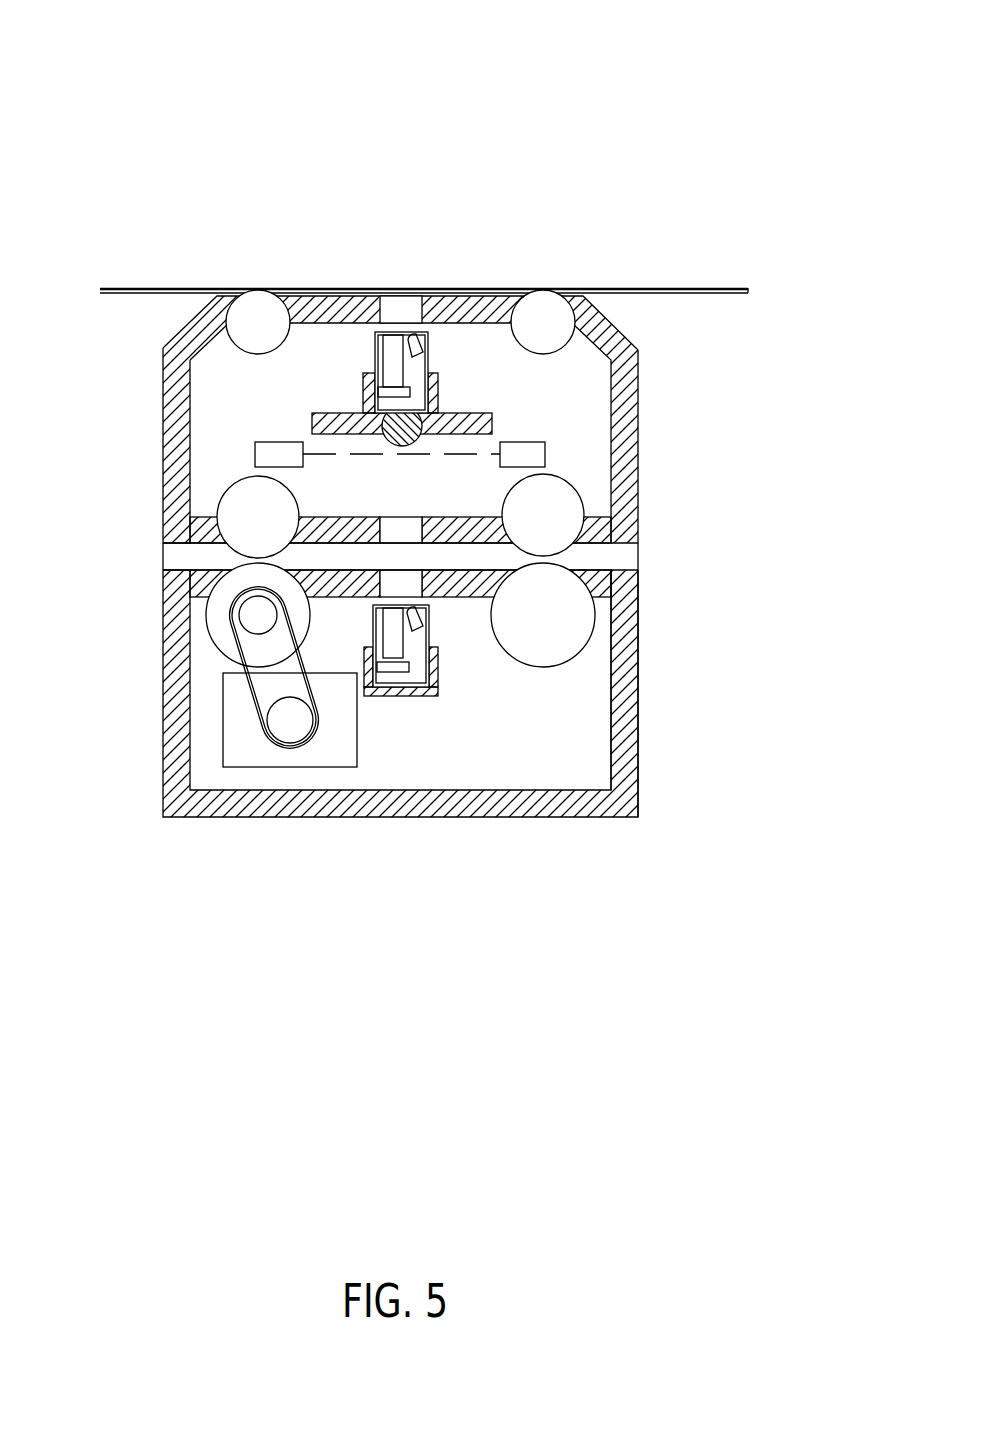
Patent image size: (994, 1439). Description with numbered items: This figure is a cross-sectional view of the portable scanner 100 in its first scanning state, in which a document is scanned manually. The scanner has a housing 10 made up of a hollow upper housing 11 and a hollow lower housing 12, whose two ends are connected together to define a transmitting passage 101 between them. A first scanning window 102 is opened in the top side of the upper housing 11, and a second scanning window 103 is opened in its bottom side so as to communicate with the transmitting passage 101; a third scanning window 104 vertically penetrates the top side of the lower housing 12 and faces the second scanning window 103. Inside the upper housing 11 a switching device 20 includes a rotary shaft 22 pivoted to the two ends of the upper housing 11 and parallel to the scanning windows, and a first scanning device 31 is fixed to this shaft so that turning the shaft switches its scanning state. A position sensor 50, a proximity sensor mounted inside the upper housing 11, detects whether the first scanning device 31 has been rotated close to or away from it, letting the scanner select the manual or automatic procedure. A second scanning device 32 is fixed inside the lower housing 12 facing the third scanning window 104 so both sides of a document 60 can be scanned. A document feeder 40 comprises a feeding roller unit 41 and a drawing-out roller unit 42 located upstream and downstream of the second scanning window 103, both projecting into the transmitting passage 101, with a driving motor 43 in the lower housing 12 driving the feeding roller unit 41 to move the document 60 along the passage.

The portable scanner 100 is at (397, 41).
The housing 10 is at (682, 393).
The upper housing 11 is at (323, 305).
The lower housing 12 is at (625, 720).
The switching device 20 is at (470, 420).
The rotary shaft 22 is at (340, 425).
The first scanning device 31 is at (418, 365).
The second scanning device 32 is at (407, 675).
The document feeder 40 is at (526, 731).
The feeding roller unit 41 is at (223, 612).
The drawing-out roller unit 42 is at (563, 627).
The driving motor 43 is at (248, 726).
The position sensor 50 is at (522, 455).
The document 60 is at (748, 289).
The transmitting passage 101 is at (213, 550).
The first scanning window 102 is at (404, 312).
The second scanning window 103 is at (400, 530).
The third scanning window 104 is at (407, 580).